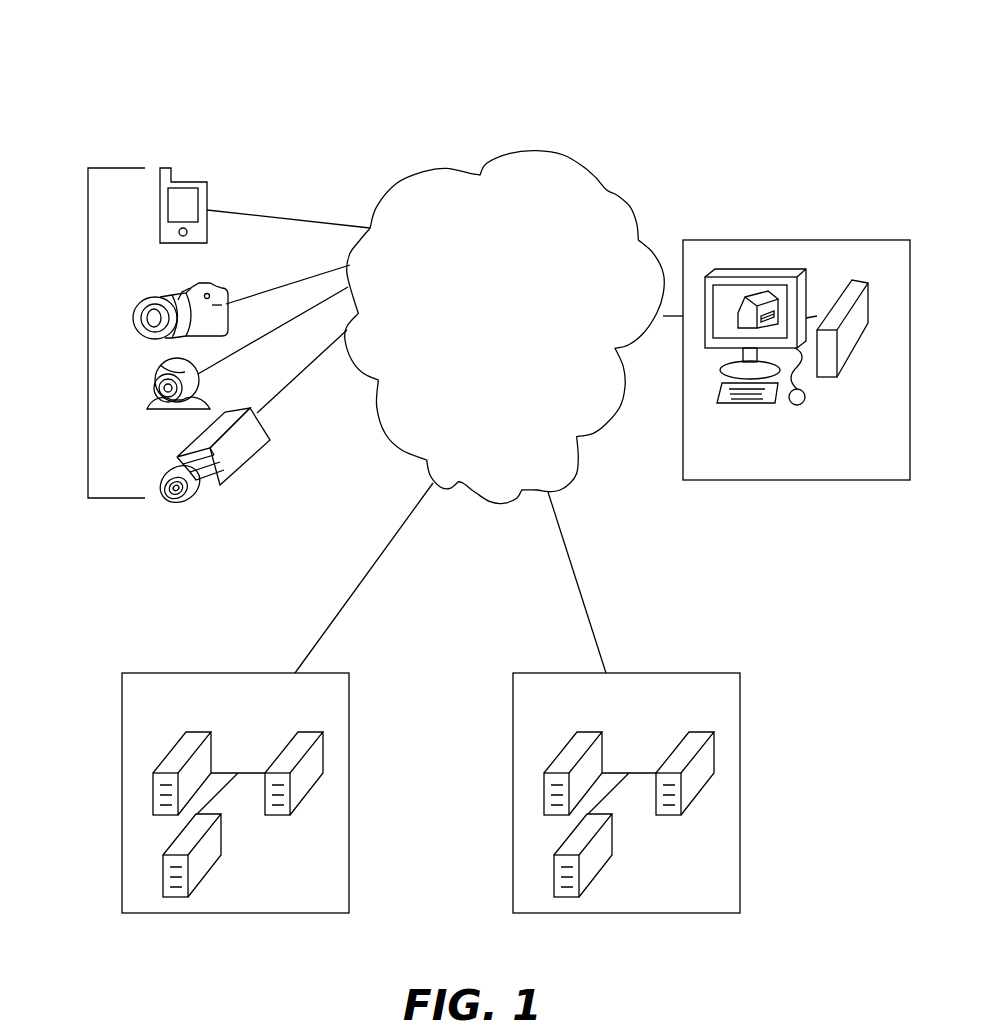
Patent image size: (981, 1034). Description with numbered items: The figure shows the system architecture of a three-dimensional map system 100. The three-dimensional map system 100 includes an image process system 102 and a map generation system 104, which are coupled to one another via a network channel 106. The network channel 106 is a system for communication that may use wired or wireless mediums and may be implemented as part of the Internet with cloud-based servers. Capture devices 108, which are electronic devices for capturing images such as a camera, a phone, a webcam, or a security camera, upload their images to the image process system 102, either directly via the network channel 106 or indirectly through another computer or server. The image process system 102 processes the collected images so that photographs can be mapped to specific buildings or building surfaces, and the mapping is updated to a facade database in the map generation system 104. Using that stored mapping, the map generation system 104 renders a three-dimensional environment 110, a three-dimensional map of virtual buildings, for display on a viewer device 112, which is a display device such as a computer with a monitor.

The three-dimensional map system 100 is at (206, 62).
The image process system 102 is at (257, 901).
The map generation system 104 is at (648, 901).
The network channel 106 is at (526, 481).
The capture devices 108 is at (88, 337).
The 3D environment 110 is at (732, 297).
The viewer device 112 is at (820, 467).